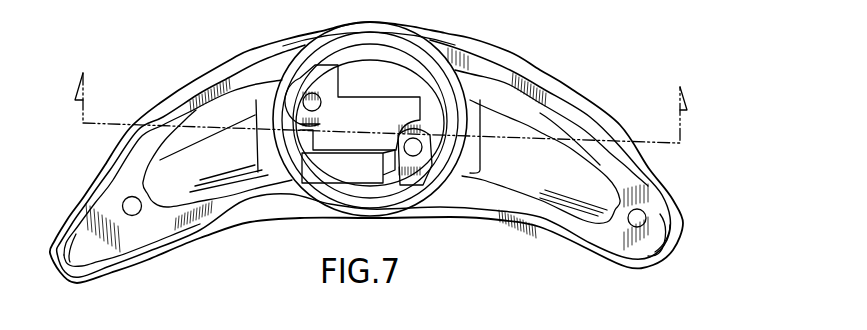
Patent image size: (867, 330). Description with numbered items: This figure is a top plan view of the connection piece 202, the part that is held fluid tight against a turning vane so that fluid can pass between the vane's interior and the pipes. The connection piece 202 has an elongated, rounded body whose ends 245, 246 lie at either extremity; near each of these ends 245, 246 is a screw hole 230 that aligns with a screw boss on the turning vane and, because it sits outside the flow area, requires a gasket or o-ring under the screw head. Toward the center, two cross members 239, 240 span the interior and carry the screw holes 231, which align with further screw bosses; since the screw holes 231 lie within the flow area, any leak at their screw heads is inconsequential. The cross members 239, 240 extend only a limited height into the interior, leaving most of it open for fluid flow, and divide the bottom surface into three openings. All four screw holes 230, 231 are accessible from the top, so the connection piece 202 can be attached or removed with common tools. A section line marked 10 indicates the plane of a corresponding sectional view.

The section line 10 is at (389, 91).
The connection piece 202 is at (558, 263).
The screw holes 230 is at (128, 204).
The screw holes 231 is at (310, 96).
The cross member 239 is at (430, 115).
The cross member 240 is at (300, 140).
The end 245 is at (662, 257).
The end 246 is at (57, 273).